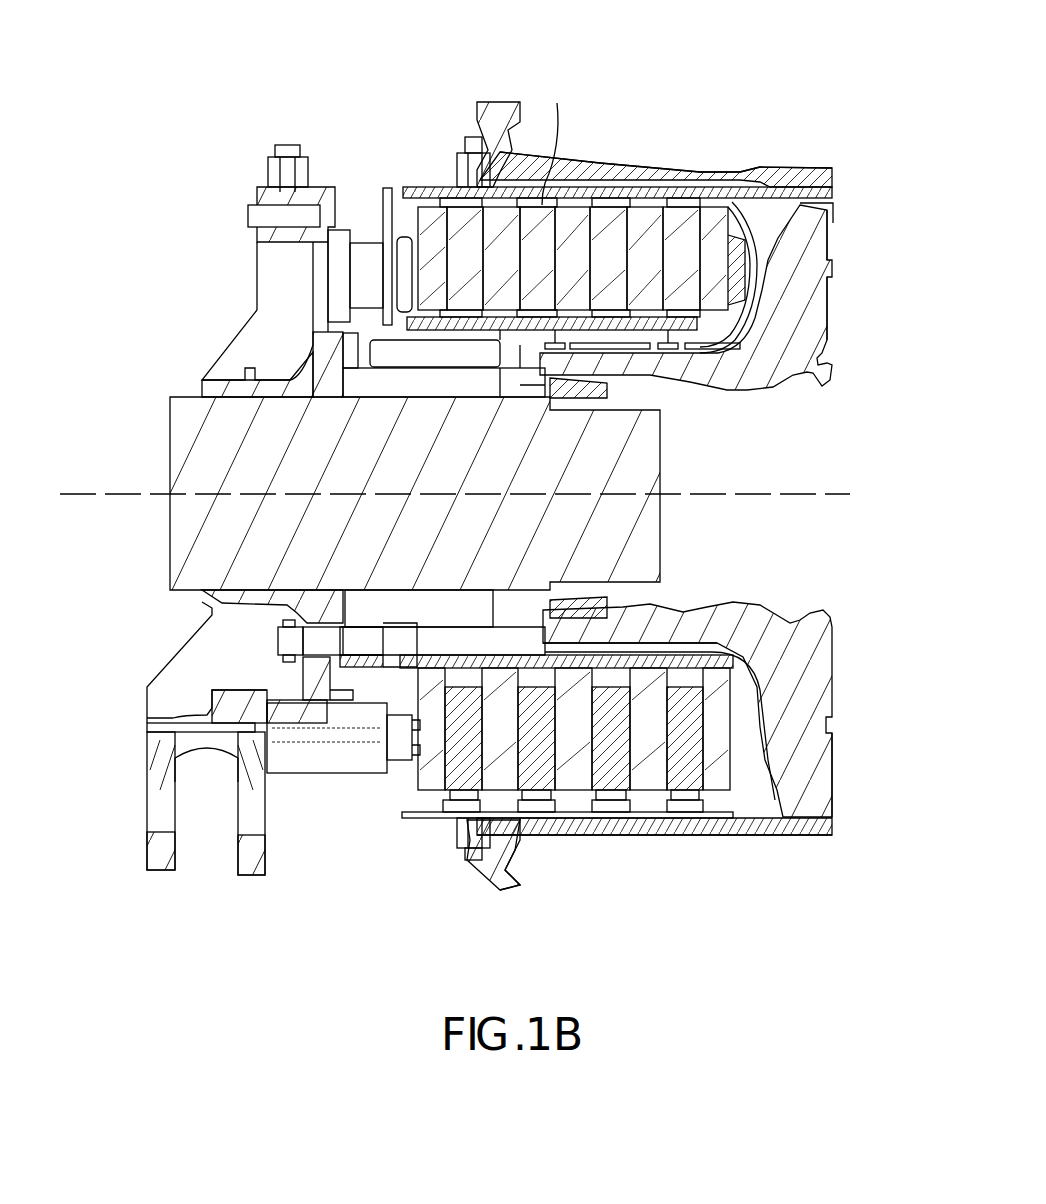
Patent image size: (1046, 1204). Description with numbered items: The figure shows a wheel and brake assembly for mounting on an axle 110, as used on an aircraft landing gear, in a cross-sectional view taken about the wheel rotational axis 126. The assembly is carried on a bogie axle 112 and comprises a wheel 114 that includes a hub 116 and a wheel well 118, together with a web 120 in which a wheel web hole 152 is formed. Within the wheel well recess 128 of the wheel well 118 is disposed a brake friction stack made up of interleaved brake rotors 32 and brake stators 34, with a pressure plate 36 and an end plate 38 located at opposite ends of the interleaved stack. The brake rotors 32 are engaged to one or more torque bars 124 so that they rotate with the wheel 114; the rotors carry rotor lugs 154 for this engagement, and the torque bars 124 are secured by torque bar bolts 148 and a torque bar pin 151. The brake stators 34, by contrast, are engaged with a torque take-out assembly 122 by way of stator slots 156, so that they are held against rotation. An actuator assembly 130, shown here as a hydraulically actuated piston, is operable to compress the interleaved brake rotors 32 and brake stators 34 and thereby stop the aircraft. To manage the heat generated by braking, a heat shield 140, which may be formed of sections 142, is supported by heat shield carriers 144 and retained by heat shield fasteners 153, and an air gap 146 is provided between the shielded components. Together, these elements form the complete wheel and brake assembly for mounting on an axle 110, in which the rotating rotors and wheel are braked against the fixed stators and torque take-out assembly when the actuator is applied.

The wheel and brake assembly for mounting on an axle 110 is at (858, 100).
The bogie axle 112 is at (150, 445).
The wheel 114 is at (683, 145).
The hub 116 is at (630, 363).
The wheel well 118 is at (637, 833).
The web 120 is at (807, 703).
The torque take-out assembly 122 is at (470, 343).
The torque bars 124 is at (408, 187).
The wheel rotational axis 126 is at (723, 495).
The wheel well recess 128 is at (775, 253).
The actuator assembly 130 is at (320, 796).
The heat shield 140 is at (453, 820).
The heat shield sections 142 is at (605, 185).
The heat shield carriers 144 is at (480, 853).
The air gap 146 is at (493, 185).
The torque bar bolts 148 is at (465, 170).
The torque bar pin 151 is at (778, 220).
The wheel web hole 152 is at (833, 223).
The heat shield fasteners 153 is at (468, 877).
The rotor lugs 154 is at (493, 197).
The stator slots 156 is at (497, 330).
The brake rotors 32 is at (473, 273).
The brake stators 34 is at (510, 273).
The pressure plate 36 is at (441, 273).
The end plate 38 is at (723, 273).